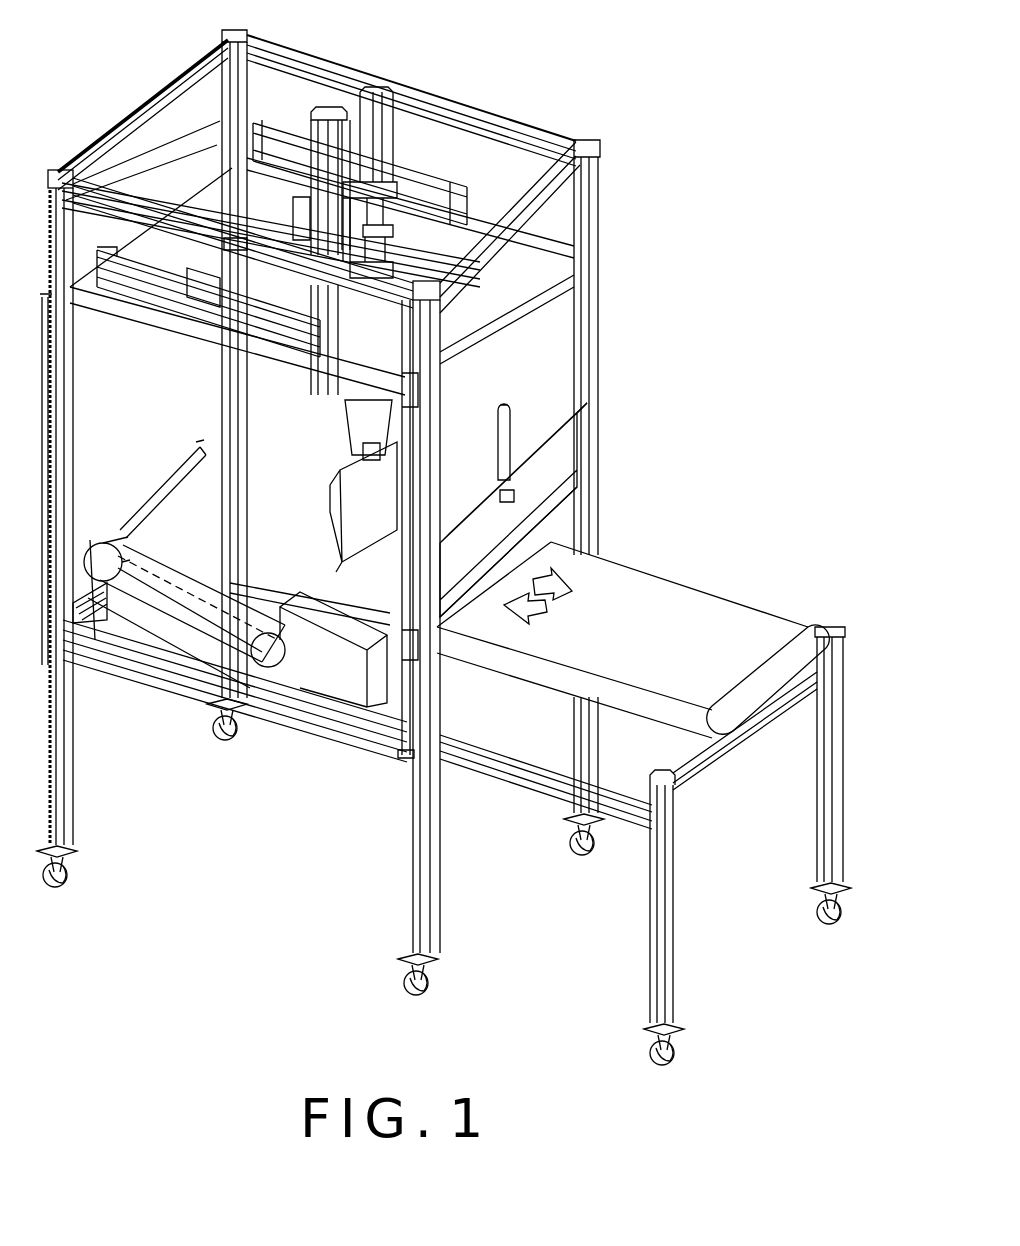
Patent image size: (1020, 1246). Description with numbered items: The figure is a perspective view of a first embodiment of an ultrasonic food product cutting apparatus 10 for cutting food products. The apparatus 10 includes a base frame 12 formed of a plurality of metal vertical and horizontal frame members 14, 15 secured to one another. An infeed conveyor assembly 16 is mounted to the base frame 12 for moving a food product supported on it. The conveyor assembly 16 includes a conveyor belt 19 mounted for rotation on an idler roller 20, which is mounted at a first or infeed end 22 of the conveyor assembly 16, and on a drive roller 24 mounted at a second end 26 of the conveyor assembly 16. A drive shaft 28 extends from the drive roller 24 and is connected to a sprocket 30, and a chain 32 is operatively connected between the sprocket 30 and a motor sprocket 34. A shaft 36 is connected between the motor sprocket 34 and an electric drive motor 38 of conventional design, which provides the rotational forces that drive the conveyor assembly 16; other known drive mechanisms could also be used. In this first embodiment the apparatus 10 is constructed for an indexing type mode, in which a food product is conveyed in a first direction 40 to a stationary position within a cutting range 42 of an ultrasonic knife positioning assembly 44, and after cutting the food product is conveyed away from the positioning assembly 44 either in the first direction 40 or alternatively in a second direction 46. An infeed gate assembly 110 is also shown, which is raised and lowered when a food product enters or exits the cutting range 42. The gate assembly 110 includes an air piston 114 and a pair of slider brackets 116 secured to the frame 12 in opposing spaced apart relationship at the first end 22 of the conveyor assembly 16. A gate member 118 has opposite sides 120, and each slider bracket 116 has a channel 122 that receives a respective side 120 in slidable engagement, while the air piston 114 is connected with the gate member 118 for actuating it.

The ultrasonic food product cutting apparatus 10 is at (436, 512).
The base frame 12 is at (600, 143).
The vertical frame members 14 is at (222, 125).
The horizontal frame members 15 is at (137, 108).
The infeed conveyor assembly 16 is at (671, 773).
The conveyor belt 19 is at (677, 600).
The idler roller 20 is at (727, 727).
The first or infeed end 22 is at (813, 600).
The drive roller 24 is at (160, 490).
The second end 26 is at (160, 454).
The drive shaft 28 is at (132, 511).
The sprocket 30 is at (123, 540).
The chain 32 is at (177, 607).
The motor sprocket 34 is at (283, 627).
The shaft 36 is at (270, 655).
The electric drive motor 38 is at (357, 680).
The first direction 40 is at (527, 610).
The cutting range 42 is at (297, 454).
The ultrasonic knife positioning assembly 44 is at (335, 108).
The second direction 46 is at (565, 583).
The infeed gate assembly 110 is at (551, 390).
The air piston 114 is at (497, 427).
The slider brackets 116 is at (590, 548).
The gate member 118 is at (563, 483).
The opposite sides 120 is at (577, 437).
The channel 122 is at (580, 512).